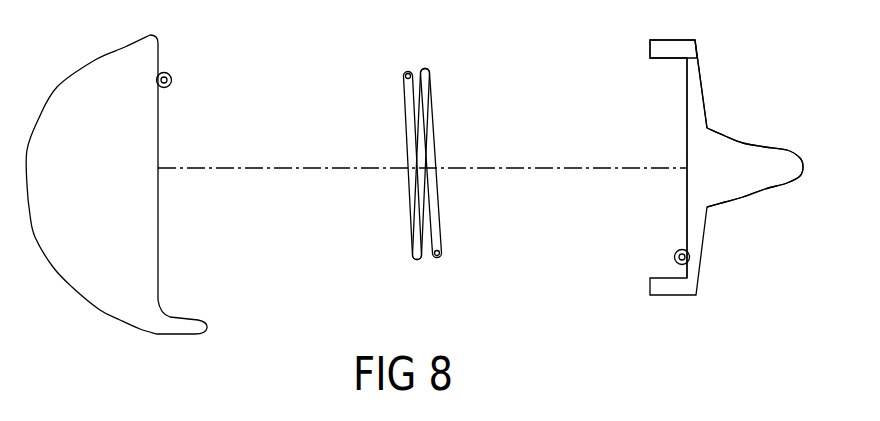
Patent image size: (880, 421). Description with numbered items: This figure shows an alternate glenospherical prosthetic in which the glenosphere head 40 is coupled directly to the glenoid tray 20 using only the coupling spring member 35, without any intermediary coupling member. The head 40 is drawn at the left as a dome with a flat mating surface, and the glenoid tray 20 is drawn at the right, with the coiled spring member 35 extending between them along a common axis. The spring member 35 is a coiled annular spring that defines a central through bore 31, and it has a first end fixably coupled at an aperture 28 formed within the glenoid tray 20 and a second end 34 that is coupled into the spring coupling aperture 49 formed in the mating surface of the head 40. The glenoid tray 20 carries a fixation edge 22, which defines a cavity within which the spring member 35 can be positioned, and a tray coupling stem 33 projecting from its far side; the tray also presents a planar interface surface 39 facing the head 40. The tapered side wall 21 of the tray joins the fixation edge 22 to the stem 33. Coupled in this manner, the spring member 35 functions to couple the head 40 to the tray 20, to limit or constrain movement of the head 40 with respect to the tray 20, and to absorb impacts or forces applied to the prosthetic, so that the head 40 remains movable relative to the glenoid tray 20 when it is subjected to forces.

The glenoid tray 20 is at (697, 98).
The tapered side wall 21 is at (702, 62).
The fixation edge 22 is at (670, 48).
The aperture 28 is at (675, 256).
The central through bore 31 is at (460, 145).
The tray coupling stem 33 is at (755, 182).
The second end 34 is at (440, 256).
The spring member 35 is at (405, 75).
The planar interface surface 39 is at (686, 214).
The glenosphere head 40 is at (90, 293).
The spring coupling aperture 49 is at (172, 80).